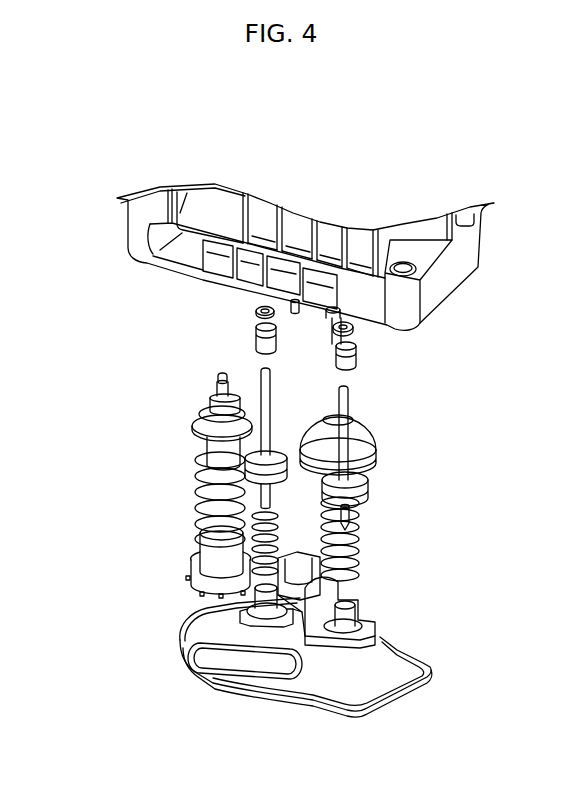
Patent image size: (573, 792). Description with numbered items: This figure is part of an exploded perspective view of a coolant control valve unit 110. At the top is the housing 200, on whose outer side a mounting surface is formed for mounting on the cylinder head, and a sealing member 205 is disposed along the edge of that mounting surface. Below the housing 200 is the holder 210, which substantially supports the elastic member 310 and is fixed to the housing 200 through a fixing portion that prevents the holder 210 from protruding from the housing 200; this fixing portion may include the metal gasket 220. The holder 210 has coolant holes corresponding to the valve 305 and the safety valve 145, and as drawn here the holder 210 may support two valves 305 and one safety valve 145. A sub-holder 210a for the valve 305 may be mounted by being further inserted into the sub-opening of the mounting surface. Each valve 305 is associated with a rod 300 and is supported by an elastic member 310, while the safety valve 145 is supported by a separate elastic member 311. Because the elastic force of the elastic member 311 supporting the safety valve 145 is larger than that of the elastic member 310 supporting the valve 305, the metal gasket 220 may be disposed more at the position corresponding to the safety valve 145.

The coolant control valve unit 110 is at (116, 455).
The safety valve 145 is at (191, 395).
The housing 200 is at (138, 237).
The sealing member 205 is at (187, 615).
The holder 210 is at (402, 710).
The sub-holder 210a is at (257, 636).
The metal gasket 220 is at (200, 593).
The rod 300 is at (350, 403).
The valve 305 is at (358, 433).
The elastic member 310 is at (360, 537).
The elastic member 311 is at (195, 508).